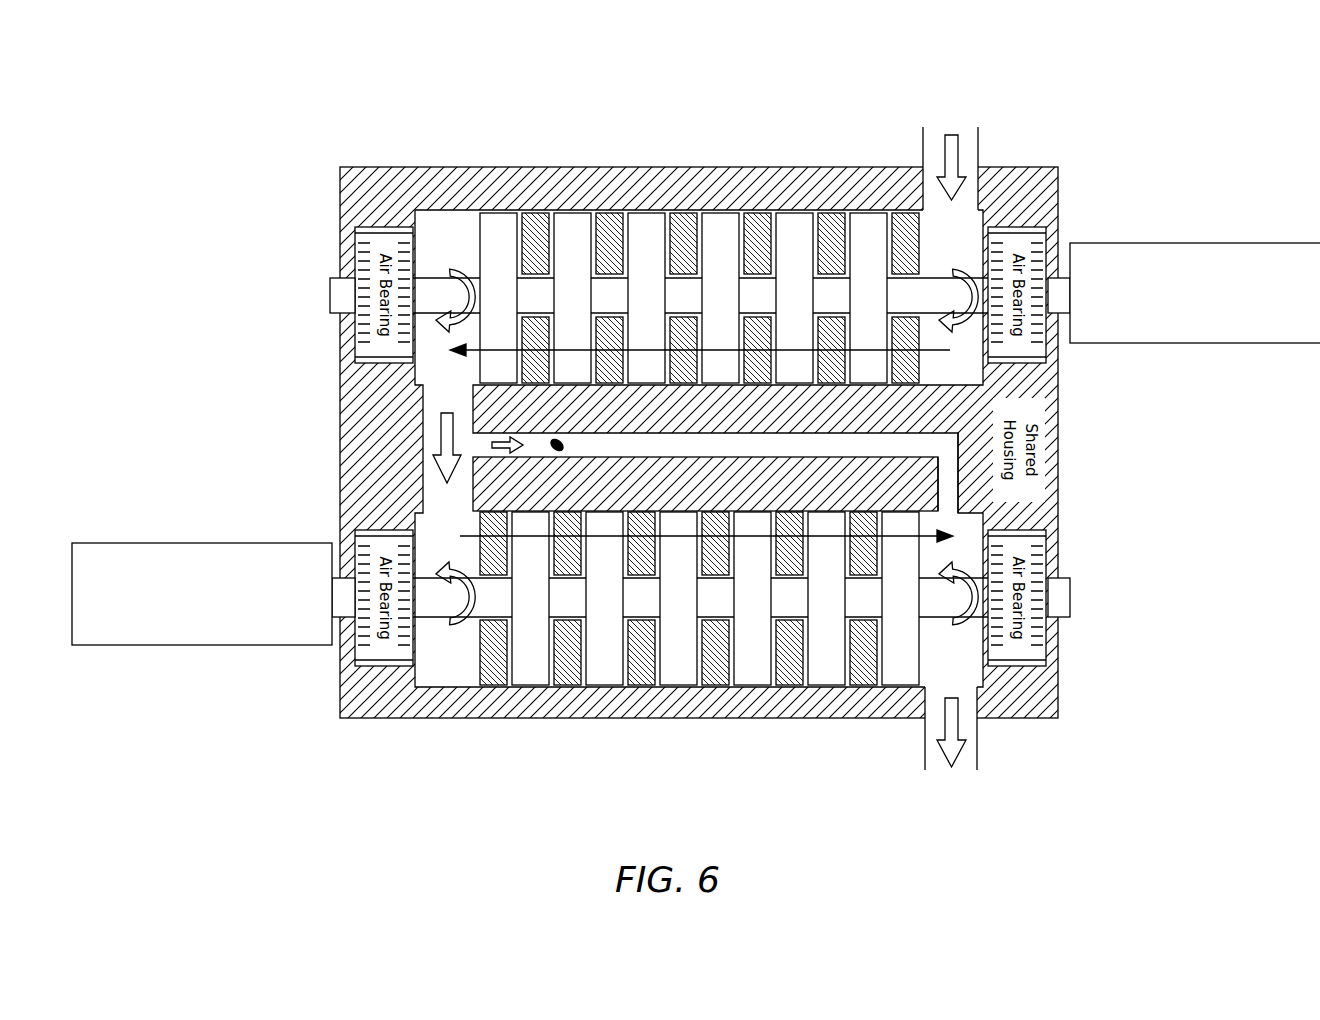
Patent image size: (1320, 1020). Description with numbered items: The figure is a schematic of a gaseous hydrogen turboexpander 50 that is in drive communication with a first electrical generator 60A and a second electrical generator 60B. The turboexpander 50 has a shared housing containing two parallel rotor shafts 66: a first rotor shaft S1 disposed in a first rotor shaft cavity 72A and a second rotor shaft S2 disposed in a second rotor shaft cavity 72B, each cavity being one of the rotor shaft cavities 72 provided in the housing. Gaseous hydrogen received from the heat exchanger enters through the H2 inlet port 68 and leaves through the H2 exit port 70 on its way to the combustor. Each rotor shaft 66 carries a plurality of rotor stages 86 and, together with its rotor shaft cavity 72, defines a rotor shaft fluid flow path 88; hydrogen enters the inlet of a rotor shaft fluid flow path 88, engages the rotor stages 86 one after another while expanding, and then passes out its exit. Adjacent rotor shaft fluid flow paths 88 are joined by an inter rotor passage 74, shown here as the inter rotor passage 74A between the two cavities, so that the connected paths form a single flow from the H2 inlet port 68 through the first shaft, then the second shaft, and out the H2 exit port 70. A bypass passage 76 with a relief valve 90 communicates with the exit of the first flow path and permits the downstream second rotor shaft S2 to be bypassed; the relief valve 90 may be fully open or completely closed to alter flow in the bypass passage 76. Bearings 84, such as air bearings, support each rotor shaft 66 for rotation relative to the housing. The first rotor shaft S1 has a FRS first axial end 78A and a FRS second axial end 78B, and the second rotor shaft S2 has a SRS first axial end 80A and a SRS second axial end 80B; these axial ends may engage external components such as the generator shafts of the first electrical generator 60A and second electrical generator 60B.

The gaseous hydrogen turboexpander 50 is at (433, 118).
The bearings 84 is at (370, 243).
The FRS second axial end 78B is at (330, 298).
The FRS first axial end 78A is at (1063, 316).
The SRS first axial end 80A is at (336, 620).
The SRS second axial end 80B is at (1072, 600).
The first electrical generator 60A is at (132, 636).
The second electrical generator 60B is at (1312, 335).
The H2 inlet port 68 is at (975, 130).
The H2 exit port 70 is at (972, 760).
The rotor stages 86 is at (858, 208).
The rotor shaft cavity 72 is at (699, 446).
The first rotor shaft cavity 72A is at (617, 208).
The second rotor shaft cavity 72B is at (783, 688).
The rotor shaft 66 is at (678, 446).
The first rotor shaft S1 is at (678, 446).
The second rotor shaft S2 is at (668, 704).
The inter rotor passage 74 is at (333, 437).
The inter rotor passage 74A is at (431, 452).
The bypass passage 76 is at (738, 426).
The rotor shaft fluid flow path 88 is at (862, 525).
The relief valve 90 is at (552, 441).